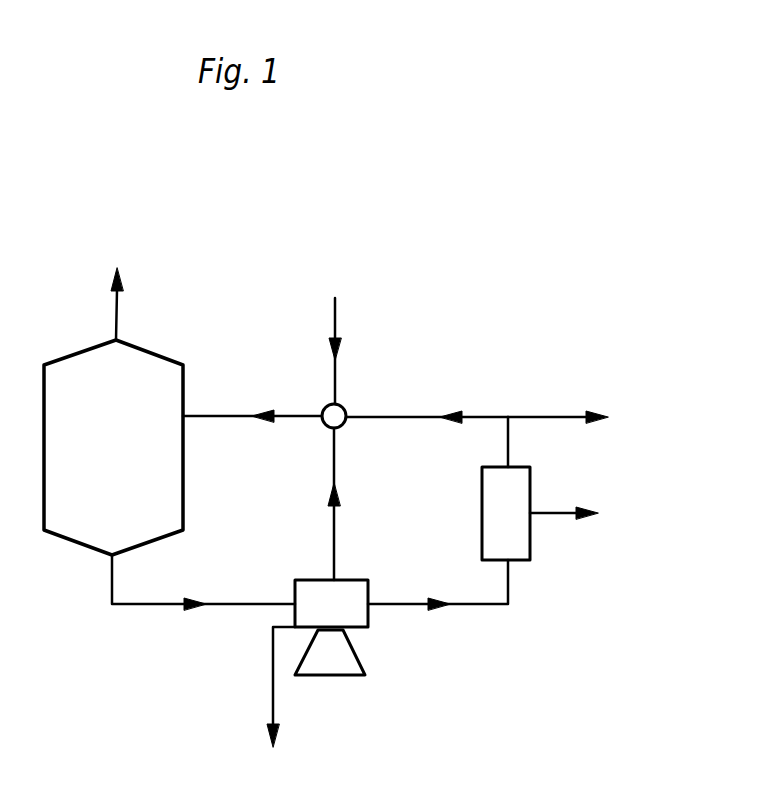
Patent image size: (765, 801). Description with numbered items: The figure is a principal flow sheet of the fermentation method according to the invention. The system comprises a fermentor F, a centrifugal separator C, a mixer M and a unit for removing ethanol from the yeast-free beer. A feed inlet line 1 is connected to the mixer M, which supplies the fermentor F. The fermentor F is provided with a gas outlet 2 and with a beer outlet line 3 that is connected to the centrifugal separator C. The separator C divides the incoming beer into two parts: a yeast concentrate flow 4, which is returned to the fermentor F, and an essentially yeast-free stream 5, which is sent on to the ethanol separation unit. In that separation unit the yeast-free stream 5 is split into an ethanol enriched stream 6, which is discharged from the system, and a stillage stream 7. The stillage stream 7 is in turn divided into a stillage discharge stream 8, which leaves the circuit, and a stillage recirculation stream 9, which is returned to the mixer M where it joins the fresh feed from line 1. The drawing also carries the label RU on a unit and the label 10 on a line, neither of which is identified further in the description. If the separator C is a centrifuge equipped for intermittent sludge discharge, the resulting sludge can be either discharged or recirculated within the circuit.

The feed inlet line 1 is at (157, 605).
The gas outlet 2 is at (462, 607).
The beer outlet line 3 is at (478, 417).
The yeast concentrate flow 4 is at (288, 414).
The yeast-free stream 5 is at (335, 520).
The ethanol enriched stream 6 is at (337, 326).
The stillage stream 7 is at (118, 313).
The stillage discharge stream 8 is at (274, 712).
The stillage recirculation stream 9 is at (553, 515).
The purge line 10 is at (545, 417).
The fermentor F is at (80, 513).
The mixer M is at (340, 405).
The reaction unit RU is at (517, 495).
The centrifugal separator C is at (357, 615).